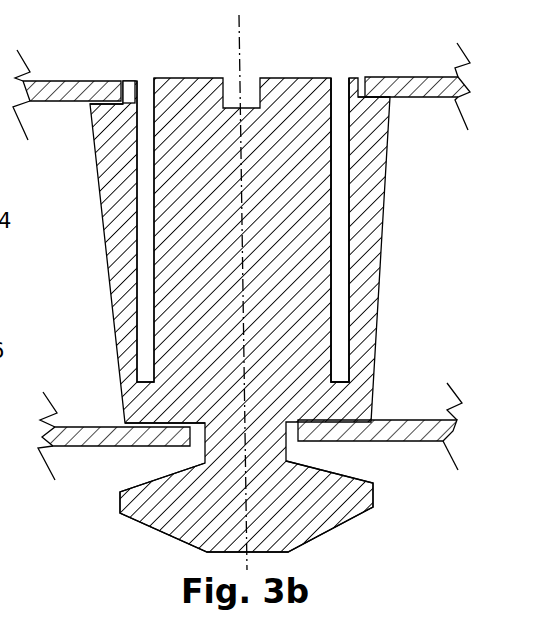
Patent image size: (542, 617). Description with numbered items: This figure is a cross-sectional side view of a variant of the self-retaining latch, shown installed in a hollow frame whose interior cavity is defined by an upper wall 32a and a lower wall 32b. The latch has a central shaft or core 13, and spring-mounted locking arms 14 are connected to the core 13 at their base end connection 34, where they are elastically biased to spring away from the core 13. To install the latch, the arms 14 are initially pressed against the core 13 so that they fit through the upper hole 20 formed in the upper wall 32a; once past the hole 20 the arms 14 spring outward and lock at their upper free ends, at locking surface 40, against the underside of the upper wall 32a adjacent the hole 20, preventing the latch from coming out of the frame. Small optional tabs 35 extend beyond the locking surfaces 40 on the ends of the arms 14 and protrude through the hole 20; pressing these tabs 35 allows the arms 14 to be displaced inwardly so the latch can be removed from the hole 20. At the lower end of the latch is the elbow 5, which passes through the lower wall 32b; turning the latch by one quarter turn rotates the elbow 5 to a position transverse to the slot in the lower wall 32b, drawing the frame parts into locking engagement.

The elbow 5 is at (326, 507).
The core 13 is at (302, 322).
The locking arms 14 is at (128, 291).
The upper hole 20 is at (341, 78).
The upper wall 32a is at (72, 90).
The lower wall 32b is at (97, 436).
The base end connection 34 is at (128, 410).
The tab 35 is at (128, 81).
The locking surface 40 is at (97, 136).